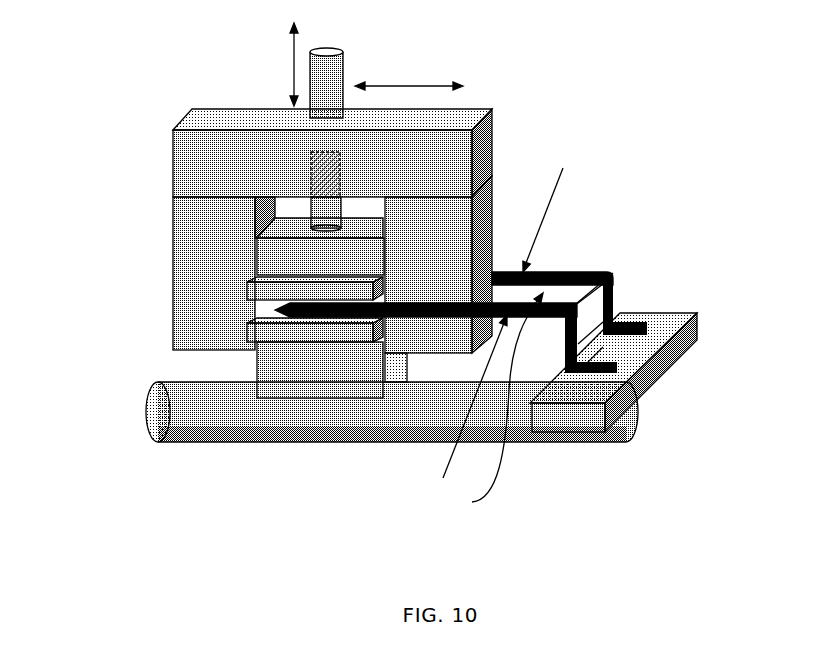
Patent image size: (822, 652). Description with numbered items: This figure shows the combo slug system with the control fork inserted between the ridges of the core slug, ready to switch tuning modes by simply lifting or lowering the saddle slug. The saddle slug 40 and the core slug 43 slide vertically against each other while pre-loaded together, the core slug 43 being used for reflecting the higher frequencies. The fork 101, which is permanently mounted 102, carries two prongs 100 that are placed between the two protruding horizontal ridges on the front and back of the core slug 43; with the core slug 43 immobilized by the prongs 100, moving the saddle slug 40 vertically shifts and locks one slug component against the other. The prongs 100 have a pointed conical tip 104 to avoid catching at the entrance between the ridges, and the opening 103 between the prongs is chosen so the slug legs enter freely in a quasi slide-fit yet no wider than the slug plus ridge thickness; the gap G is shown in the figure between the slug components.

The saddle slug 40 is at (492, 140).
The core slug 43 is at (265, 253).
The gap G is at (255, 328).
The pointed conical tip 104 is at (277, 305).
The prongs 100 is at (547, 271).
The fork 101 is at (620, 305).
The permanent mount 102 is at (677, 363).
The opening 103 is at (486, 401).